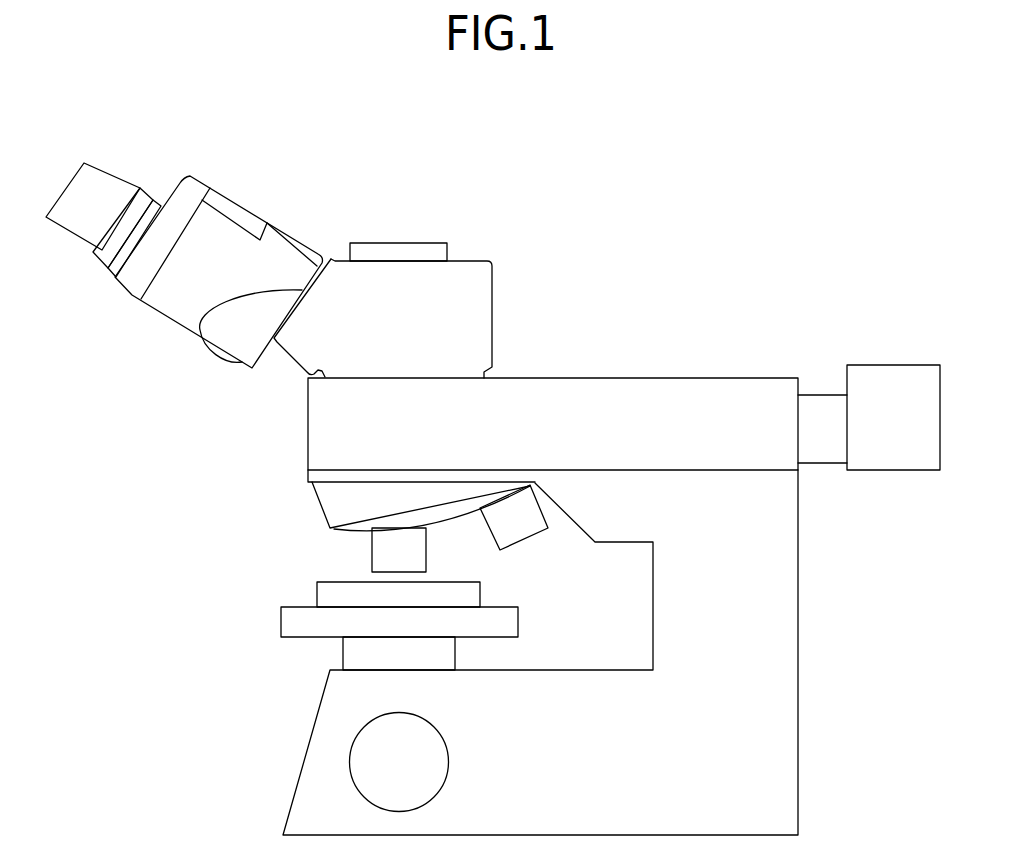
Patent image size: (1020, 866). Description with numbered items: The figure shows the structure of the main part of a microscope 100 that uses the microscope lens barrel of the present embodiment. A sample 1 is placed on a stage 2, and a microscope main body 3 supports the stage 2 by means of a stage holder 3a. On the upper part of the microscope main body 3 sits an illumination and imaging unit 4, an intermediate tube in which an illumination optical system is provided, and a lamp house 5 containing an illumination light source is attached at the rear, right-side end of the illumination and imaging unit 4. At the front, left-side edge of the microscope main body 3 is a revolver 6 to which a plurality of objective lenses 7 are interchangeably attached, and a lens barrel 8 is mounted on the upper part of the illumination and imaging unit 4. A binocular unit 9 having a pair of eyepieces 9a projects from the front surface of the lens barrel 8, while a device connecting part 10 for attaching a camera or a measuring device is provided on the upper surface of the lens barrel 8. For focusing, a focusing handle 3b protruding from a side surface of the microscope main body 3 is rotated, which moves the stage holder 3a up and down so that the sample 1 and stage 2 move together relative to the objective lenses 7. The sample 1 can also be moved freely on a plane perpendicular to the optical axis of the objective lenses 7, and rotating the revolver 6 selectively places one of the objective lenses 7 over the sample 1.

The microscope 100 is at (523, 170).
The sample 1 is at (317, 590).
The stage 2 is at (280, 622).
The microscope main body 3 is at (798, 600).
The stage holder 3a is at (342, 652).
The focusing handle 3b is at (349, 760).
The illumination and imaging unit 4 is at (742, 377).
The lamp house 5 is at (913, 365).
The revolver 6 is at (325, 518).
The objective lenses 7 is at (426, 557).
The lens barrel 8 is at (461, 260).
The binocular unit 9 is at (243, 203).
The eyepieces 9a is at (105, 169).
The device connecting part 10 is at (400, 243).